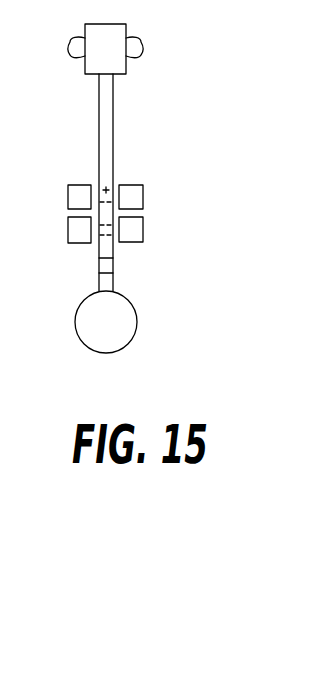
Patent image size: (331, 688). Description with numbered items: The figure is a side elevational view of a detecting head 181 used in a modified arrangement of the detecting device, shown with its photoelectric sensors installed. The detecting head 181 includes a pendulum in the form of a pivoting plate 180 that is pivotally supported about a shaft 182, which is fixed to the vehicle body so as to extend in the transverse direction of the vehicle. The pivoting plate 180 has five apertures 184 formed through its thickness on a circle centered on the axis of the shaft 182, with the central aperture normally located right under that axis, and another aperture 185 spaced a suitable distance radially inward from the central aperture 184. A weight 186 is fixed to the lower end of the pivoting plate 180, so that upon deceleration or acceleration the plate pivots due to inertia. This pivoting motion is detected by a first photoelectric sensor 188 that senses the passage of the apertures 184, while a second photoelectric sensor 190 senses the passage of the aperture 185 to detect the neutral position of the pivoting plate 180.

The pivoting plate 180 is at (105, 107).
The detecting head 181 is at (145, 85).
The shaft 182 is at (133, 44).
The apertures 184 is at (110, 234).
The aperture 185 is at (108, 180).
The weight 186 is at (118, 320).
The first photoelectric sensor 188 is at (128, 230).
The second photoelectric sensor 190 is at (72, 200).